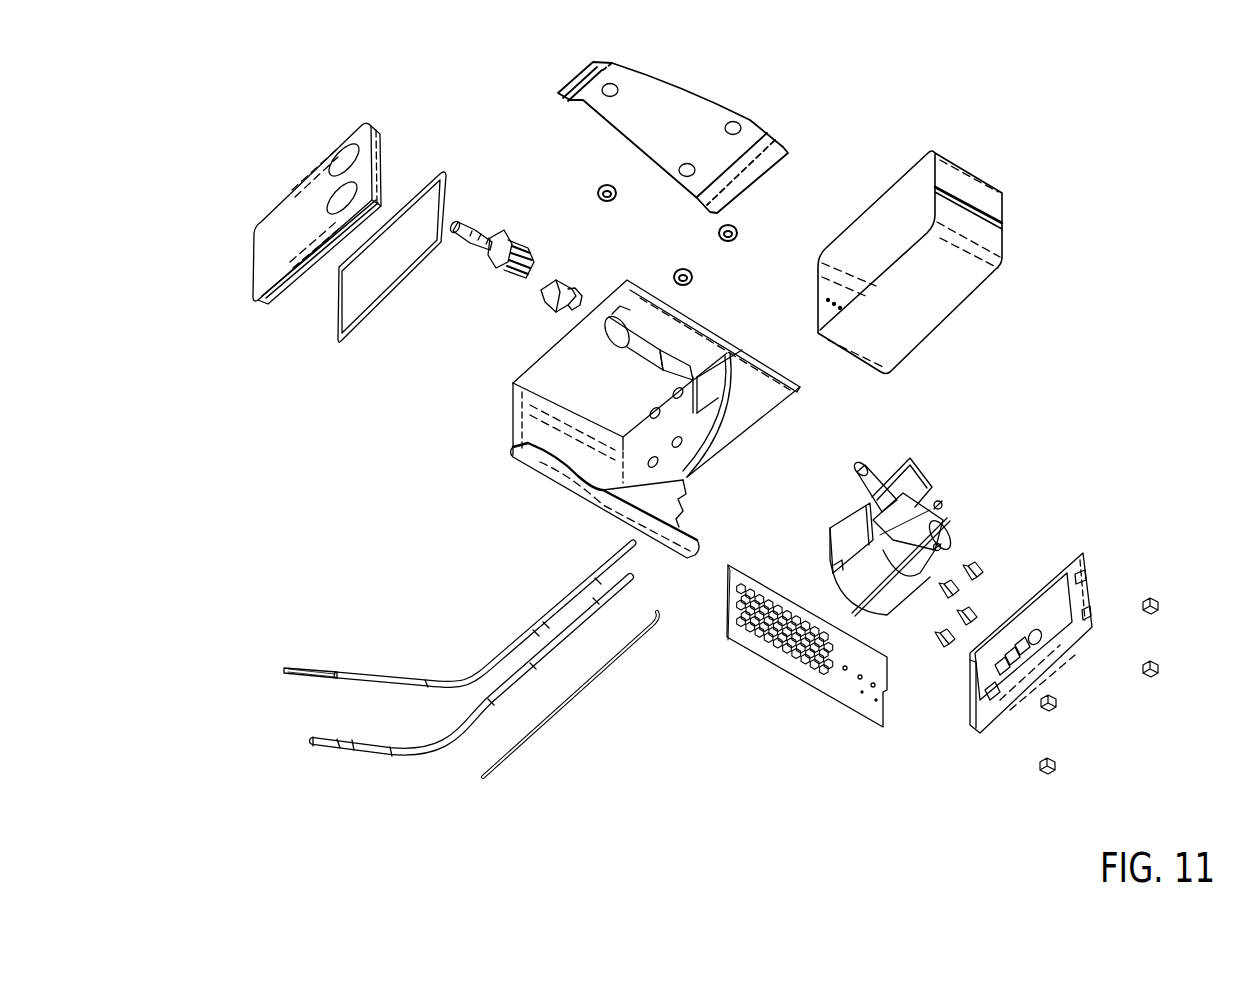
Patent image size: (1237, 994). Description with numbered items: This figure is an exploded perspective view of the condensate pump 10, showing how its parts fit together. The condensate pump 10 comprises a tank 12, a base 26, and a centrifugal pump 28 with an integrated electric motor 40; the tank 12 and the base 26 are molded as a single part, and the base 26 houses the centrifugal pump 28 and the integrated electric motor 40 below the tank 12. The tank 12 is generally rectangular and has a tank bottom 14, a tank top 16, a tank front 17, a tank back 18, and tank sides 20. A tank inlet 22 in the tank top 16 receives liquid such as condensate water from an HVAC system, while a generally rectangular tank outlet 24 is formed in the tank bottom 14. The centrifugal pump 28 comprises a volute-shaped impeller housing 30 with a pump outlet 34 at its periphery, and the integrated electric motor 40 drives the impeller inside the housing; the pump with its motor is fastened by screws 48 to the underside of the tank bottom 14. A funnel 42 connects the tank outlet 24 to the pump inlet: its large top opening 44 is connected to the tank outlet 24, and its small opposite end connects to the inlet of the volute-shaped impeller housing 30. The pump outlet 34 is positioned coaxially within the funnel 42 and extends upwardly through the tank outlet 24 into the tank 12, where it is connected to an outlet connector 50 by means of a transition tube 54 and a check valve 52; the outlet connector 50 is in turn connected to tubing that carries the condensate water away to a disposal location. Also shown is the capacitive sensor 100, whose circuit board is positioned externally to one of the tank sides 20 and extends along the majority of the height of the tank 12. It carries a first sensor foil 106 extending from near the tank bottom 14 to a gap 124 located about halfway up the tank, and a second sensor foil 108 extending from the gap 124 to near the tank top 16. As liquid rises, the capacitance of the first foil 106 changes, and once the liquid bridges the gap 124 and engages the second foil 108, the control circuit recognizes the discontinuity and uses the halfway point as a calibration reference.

The condensate pump 10 is at (1030, 113).
The tank 12 is at (612, 396).
The tank bottom 14 is at (637, 470).
The tank top 16 is at (273, 227).
The tank front 17 is at (543, 463).
The tank back 18 is at (568, 370).
The tank sides 20 is at (540, 427).
The tank inlet 22 is at (352, 190).
The tank outlet 24 is at (716, 375).
The base 26 is at (718, 461).
The centrifugal pump 28 is at (947, 523).
The volute-shaped impeller housing 30 is at (913, 533).
The pump outlet 34 is at (863, 472).
The integrated electric motor 40 is at (828, 563).
The funnel 42 is at (918, 485).
The large top opening 44 is at (898, 460).
The screws 48 is at (972, 568).
The outlet connector 50 is at (468, 245).
The check valve 52 is at (564, 282).
The transition tube 54 is at (638, 340).
The capacitive sensor 100 is at (660, 427).
The first sensor foil 106 is at (760, 668).
The second sensor foil 108 is at (748, 627).
The gap 124 is at (763, 665).